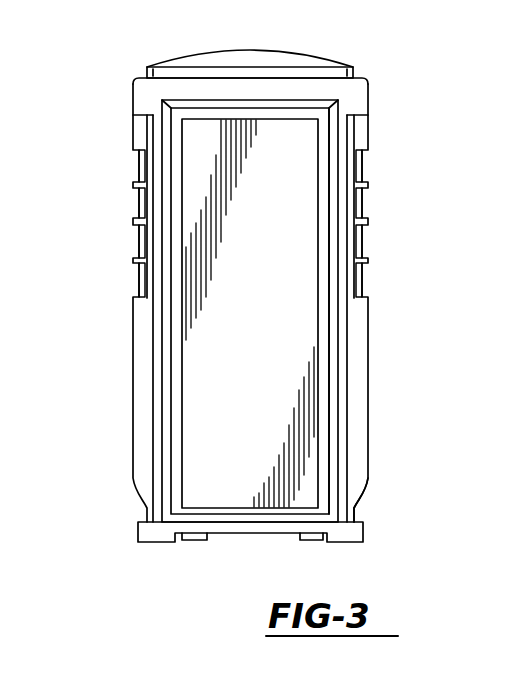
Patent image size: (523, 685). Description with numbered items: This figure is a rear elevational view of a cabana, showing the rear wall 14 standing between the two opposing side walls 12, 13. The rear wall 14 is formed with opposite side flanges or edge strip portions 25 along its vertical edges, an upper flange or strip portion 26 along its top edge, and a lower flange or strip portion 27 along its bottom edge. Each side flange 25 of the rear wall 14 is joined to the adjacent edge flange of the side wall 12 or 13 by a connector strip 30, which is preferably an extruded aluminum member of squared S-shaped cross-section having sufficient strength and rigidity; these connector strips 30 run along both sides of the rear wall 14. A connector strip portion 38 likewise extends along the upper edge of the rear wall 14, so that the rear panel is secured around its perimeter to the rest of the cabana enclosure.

The side wall 12 is at (137, 480).
The side wall 13 is at (370, 468).
The rear wall 14 is at (302, 372).
The side flange 25 is at (168, 420).
The upper flange 26 is at (300, 115).
The lower flange 27 is at (220, 517).
The connector strip 30 is at (333, 302).
The connector strip portion 38 is at (222, 107).